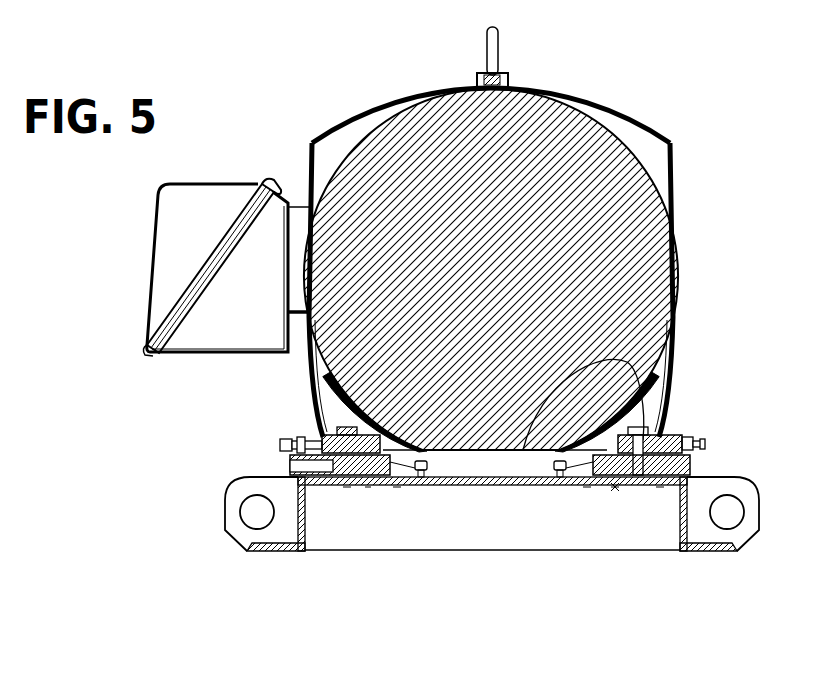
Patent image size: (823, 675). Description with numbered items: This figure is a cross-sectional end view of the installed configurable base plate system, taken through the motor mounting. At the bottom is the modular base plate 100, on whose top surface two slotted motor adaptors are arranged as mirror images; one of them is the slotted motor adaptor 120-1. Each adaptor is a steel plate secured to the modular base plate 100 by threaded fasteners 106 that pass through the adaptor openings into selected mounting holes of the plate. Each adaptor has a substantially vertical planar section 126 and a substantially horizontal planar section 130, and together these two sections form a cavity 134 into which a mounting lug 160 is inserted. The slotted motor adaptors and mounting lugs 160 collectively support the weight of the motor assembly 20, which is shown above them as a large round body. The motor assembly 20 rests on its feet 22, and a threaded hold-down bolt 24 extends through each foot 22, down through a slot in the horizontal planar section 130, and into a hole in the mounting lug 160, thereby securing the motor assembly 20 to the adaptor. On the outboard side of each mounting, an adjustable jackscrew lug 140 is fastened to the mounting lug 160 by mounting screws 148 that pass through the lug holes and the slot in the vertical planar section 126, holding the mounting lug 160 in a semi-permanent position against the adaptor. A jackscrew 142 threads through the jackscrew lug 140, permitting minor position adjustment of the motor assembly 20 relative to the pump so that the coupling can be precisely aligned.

The motor assembly 20 is at (547, 92).
The threaded hold-down bolt 24 is at (322, 412).
The feet 22 is at (668, 432).
The horizontal planar section 130 is at (683, 457).
The adjustable jackscrew lug 140 is at (303, 437).
The jackscrew 142 is at (282, 444).
The mounting screws 148 is at (297, 463).
The vertical planar section 126 is at (705, 477).
The threaded fasteners 106 is at (340, 487).
The cavity 134 is at (368, 487).
The mounting lug 160 is at (347, 487).
The slotted motor adaptor 120-1 is at (397, 487).
The modular base plate 100 is at (715, 547).